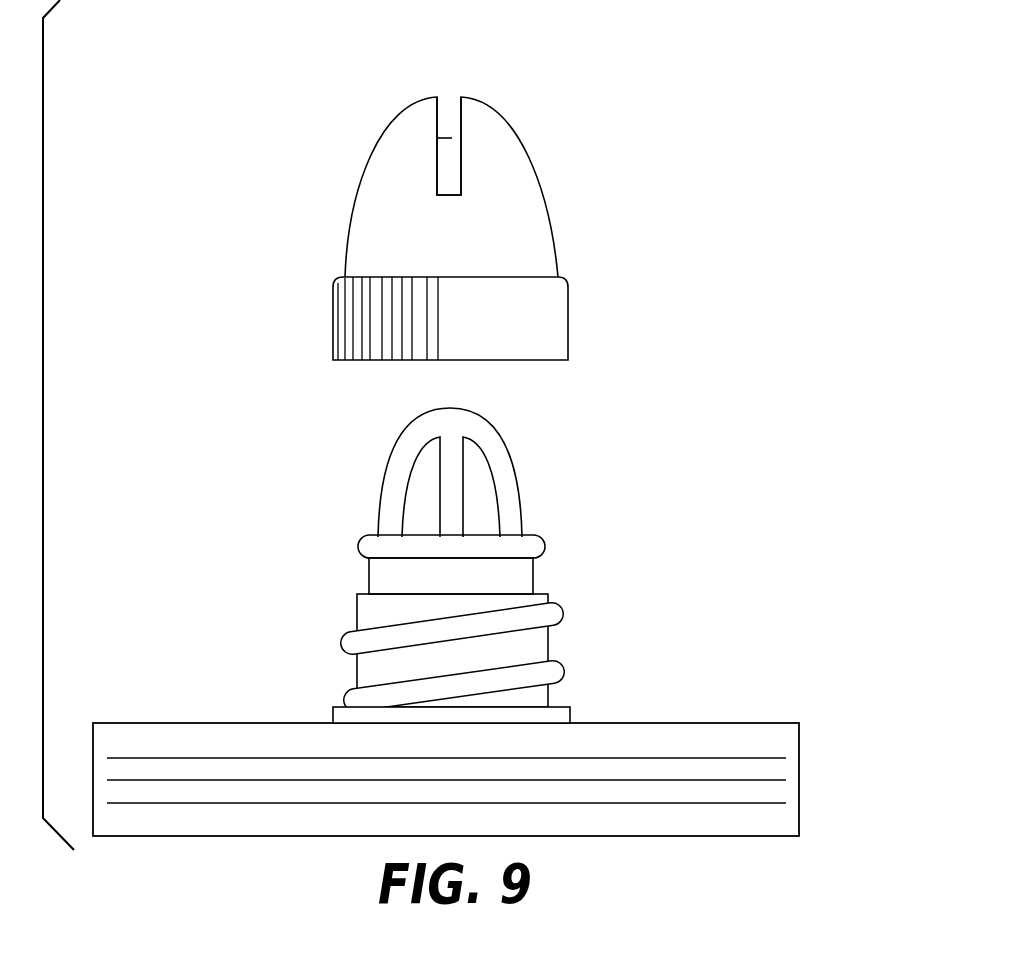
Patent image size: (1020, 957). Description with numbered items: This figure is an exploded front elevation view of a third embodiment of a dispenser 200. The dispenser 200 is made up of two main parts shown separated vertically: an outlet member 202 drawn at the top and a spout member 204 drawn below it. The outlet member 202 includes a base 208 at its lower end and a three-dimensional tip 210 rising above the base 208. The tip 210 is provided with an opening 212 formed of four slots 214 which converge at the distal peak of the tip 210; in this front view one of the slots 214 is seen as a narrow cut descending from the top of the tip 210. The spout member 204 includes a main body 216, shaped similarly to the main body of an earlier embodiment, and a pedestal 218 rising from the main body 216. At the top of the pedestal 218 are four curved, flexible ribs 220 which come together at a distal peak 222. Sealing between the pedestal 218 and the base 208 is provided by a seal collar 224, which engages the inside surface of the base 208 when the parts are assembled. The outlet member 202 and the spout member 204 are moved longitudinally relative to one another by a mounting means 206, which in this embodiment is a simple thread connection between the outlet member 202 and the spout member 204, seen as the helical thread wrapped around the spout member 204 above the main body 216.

The dispenser 200 is at (285, 262).
The outlet member 202 is at (485, 185).
The spout member 204 is at (454, 561).
The mounting means 206 is at (347, 640).
The base 208 is at (568, 323).
The 3-D tip 210 is at (503, 115).
The opening 212 is at (453, 97).
The slots 214 is at (452, 138).
The main body 216 is at (799, 768).
The pedestal 218 is at (533, 577).
The curved, flexible ribs 220 is at (400, 518).
The distal peak 222 is at (447, 408).
The seal collar 224 is at (358, 547).